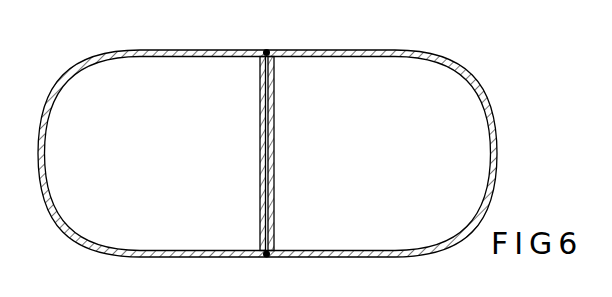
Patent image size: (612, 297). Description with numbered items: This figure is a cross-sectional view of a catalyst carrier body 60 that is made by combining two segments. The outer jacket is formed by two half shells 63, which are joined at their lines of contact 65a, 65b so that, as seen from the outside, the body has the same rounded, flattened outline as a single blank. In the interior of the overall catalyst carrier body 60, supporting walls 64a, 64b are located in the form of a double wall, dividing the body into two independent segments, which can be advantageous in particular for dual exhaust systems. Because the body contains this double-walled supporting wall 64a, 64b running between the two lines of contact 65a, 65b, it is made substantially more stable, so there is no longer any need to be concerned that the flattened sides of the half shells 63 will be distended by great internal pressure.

The catalyst carrier body 60 is at (473, 115).
The half shells 63 is at (94, 60).
The supporting wall 64a is at (260, 92).
The supporting wall 64b is at (274, 103).
The line of contact 65a is at (268, 50).
The line of contact 65b is at (268, 257).